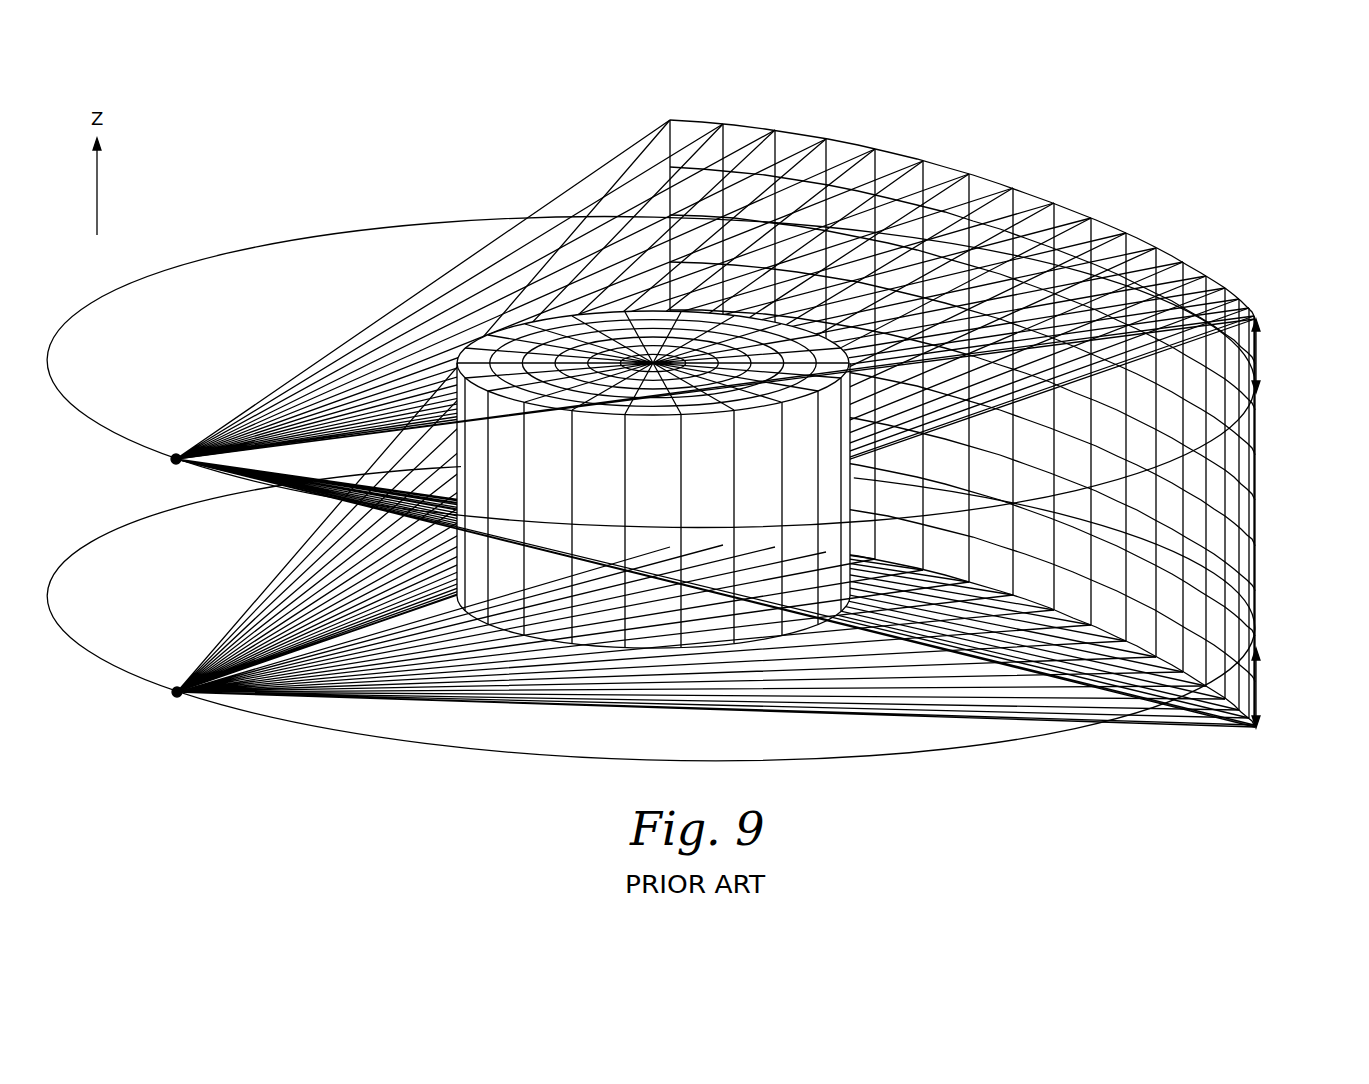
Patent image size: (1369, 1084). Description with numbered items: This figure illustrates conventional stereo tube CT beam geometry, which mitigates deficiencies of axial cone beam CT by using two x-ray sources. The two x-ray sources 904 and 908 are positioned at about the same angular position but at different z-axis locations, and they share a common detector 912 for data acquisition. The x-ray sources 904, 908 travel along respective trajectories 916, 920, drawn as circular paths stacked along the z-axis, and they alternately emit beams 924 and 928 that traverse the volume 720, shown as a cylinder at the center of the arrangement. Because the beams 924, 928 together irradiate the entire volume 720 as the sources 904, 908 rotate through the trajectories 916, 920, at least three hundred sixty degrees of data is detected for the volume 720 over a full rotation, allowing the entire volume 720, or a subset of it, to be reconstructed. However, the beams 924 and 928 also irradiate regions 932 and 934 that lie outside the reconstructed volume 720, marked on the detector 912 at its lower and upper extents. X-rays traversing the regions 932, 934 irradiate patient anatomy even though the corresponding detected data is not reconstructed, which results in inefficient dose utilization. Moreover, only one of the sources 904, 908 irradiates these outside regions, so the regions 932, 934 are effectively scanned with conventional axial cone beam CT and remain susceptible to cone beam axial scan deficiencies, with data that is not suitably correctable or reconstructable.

The volume 720 is at (512, 328).
The x-ray source 904 is at (177, 697).
The x-ray source 908 is at (172, 462).
The detector 912 is at (1258, 490).
The trajectory 916 is at (470, 746).
The trajectory 920 is at (350, 226).
The beam 924 is at (218, 614).
The beam 928 is at (287, 375).
The region 932 is at (1260, 687).
The region 934 is at (1262, 358).